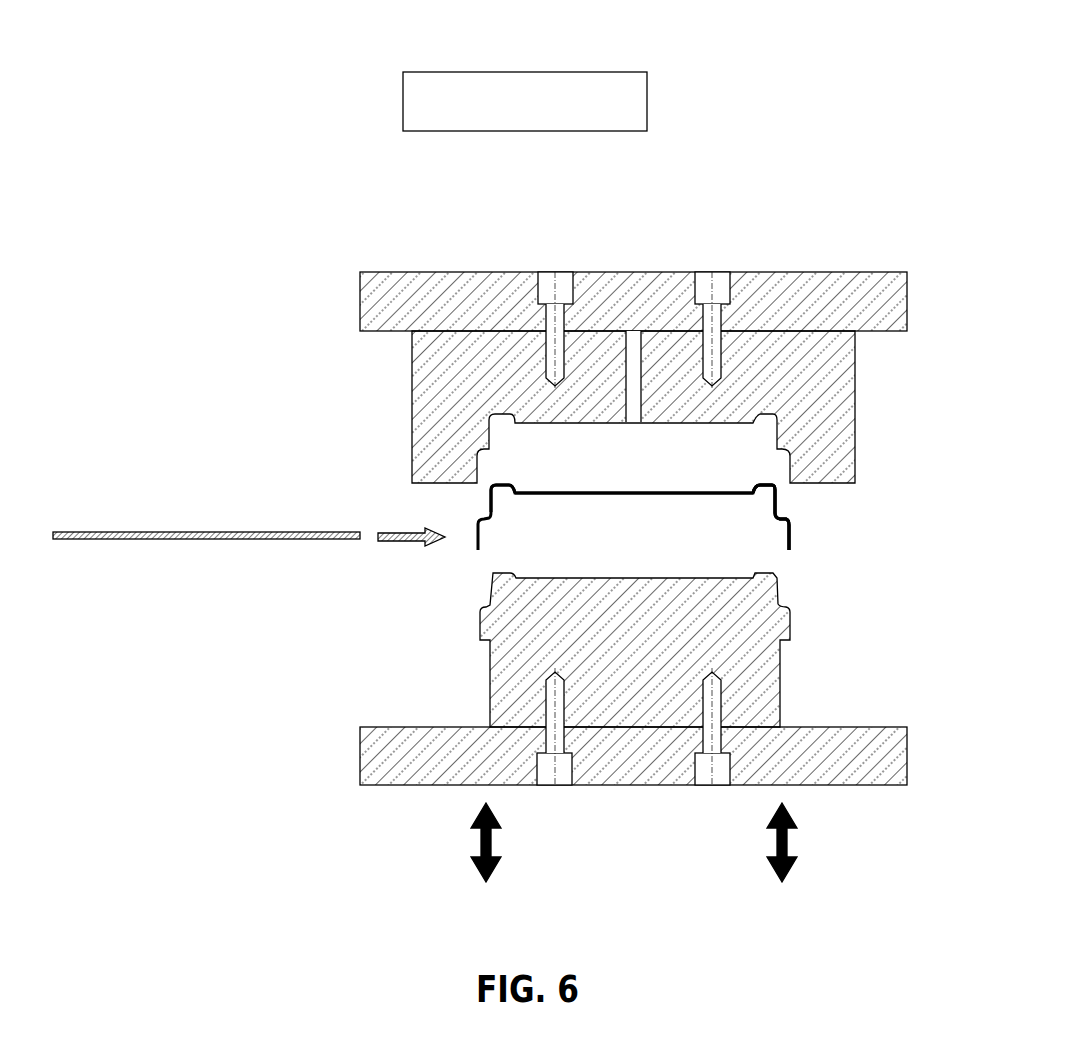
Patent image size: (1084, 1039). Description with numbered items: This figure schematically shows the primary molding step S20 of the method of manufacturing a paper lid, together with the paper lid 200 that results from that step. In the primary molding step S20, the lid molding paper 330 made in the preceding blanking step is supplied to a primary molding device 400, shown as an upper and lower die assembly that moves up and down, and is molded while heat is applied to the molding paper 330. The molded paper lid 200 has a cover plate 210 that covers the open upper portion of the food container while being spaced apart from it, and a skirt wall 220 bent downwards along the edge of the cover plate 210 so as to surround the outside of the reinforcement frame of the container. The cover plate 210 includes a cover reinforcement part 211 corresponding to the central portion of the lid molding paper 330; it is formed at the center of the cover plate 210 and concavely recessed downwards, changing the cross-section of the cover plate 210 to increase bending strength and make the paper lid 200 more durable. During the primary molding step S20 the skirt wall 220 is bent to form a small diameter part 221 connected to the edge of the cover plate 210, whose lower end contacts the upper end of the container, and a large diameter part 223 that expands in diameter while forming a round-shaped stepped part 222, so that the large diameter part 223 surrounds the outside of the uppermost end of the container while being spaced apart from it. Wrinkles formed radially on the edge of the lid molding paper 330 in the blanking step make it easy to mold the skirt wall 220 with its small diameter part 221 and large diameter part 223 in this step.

The primary molding step S20 is at (649, 100).
The paper lid 200 is at (455, 518).
The cover plate 210 is at (503, 483).
The cover reinforcement part 211 is at (659, 490).
The skirt wall 220 is at (887, 507).
The small diameter part 221 is at (778, 500).
The stepped part 222 is at (790, 521).
The large diameter part 223 is at (790, 545).
The lid molding paper 330 is at (230, 531).
The primary molding device 400 is at (697, 839).